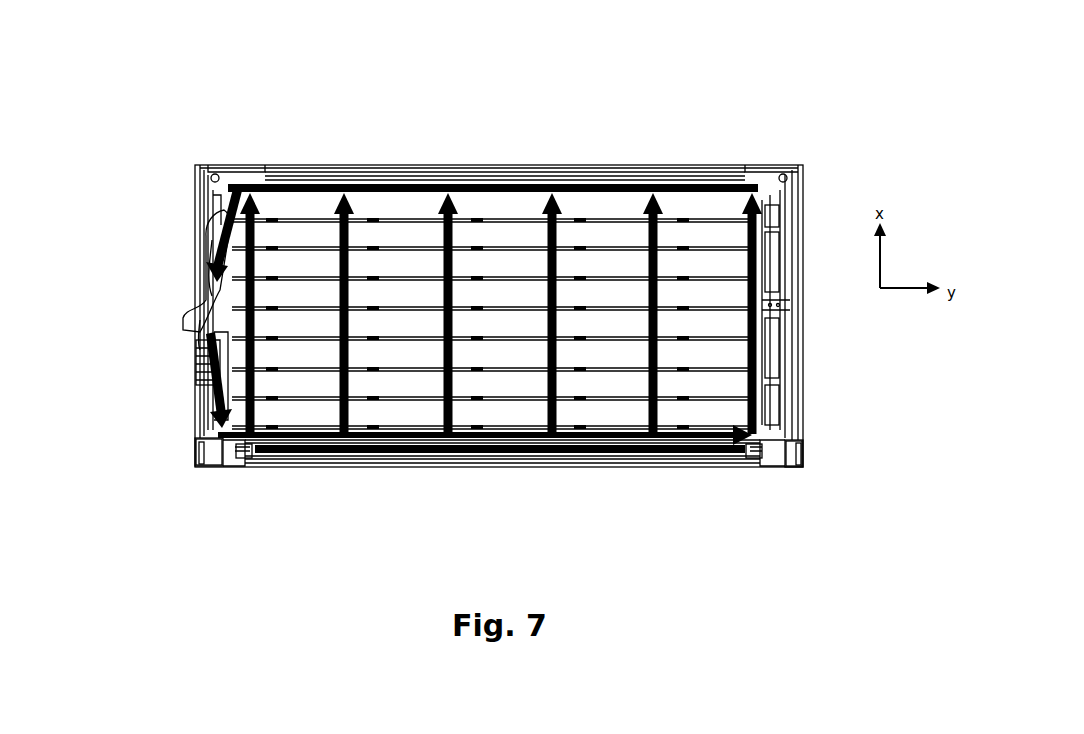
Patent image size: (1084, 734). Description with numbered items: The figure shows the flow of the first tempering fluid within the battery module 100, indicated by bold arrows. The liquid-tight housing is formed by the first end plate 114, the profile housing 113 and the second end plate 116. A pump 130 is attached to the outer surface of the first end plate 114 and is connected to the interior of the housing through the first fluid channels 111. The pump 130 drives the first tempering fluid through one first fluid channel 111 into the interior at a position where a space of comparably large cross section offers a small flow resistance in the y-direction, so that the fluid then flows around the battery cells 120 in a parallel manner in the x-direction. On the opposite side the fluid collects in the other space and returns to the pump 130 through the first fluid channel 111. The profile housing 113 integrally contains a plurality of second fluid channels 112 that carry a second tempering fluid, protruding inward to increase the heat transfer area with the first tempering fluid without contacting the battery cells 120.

The battery module 100 is at (228, 76).
The first fluid channels 111 is at (210, 218).
The second fluid channels 112 is at (355, 452).
The profile housing 113 is at (470, 463).
The first end plate 114 is at (193, 453).
The second end plate 116 is at (805, 445).
The battery cells 120 is at (488, 183).
The pump 130 is at (187, 320).